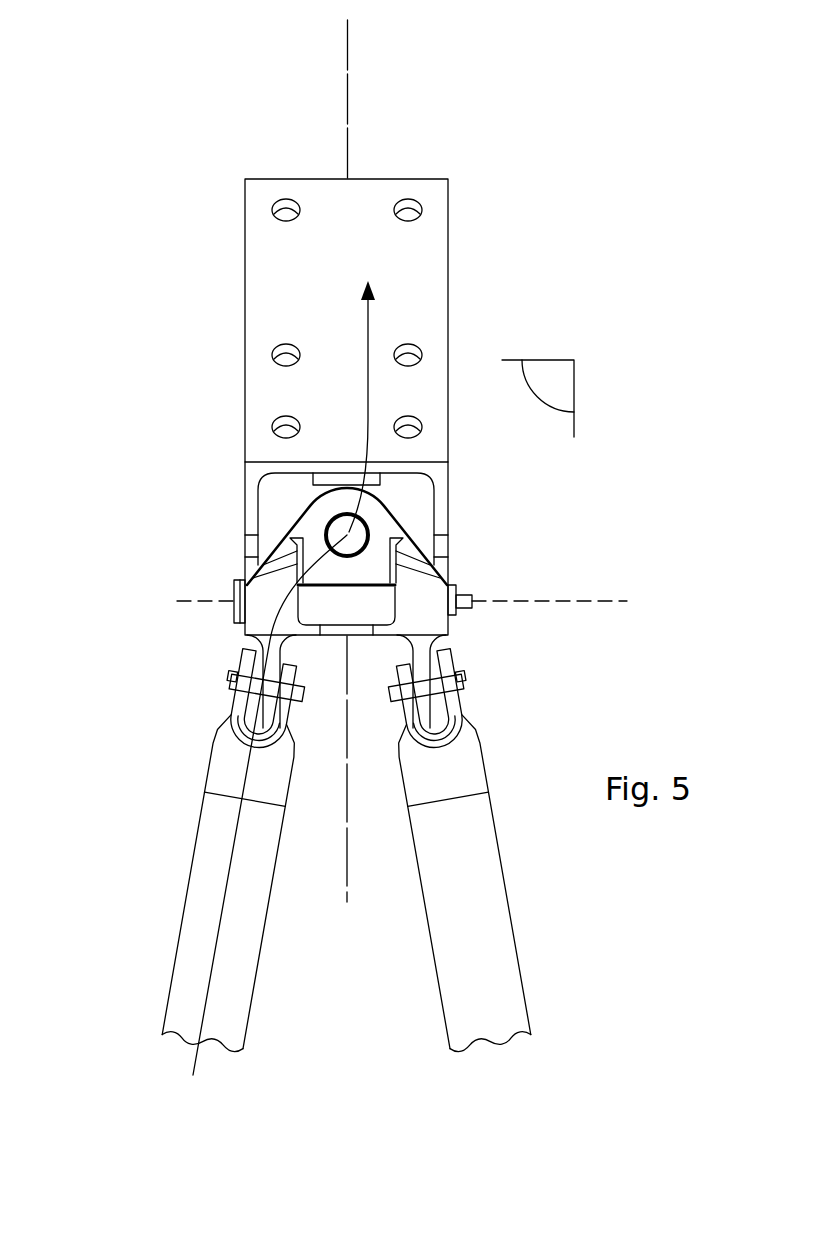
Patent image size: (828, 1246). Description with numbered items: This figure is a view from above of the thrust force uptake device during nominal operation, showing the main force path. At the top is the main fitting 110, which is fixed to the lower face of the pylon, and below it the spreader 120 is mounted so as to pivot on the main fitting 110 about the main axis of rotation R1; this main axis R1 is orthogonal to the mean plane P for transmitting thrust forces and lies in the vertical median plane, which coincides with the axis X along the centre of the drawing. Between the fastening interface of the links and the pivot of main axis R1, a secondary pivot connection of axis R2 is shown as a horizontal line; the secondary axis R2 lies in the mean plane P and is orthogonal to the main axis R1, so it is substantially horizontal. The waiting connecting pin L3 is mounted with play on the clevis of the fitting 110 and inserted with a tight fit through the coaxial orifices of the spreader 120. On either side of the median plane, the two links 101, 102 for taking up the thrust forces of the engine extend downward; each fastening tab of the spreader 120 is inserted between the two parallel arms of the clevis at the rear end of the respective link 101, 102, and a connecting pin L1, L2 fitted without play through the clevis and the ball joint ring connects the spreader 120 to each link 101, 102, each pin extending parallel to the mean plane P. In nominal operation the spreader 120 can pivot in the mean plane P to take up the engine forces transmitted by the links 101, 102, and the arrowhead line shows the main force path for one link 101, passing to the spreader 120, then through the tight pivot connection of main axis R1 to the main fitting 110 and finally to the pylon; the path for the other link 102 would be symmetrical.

The longitudinal axis X is at (348, 37).
The main fitting 110 is at (428, 272).
The mean plane for transmitting thrust forces P is at (540, 400).
The spreader 120 is at (265, 615).
The main axis of rotation R1 is at (326, 532).
The secondary axis of rotation R2 is at (568, 600).
The waiting connecting pin L3 is at (234, 590).
The connecting pin L1 is at (230, 680).
The connecting pin L2 is at (465, 683).
The link 101 is at (197, 925).
The link 102 is at (478, 898).